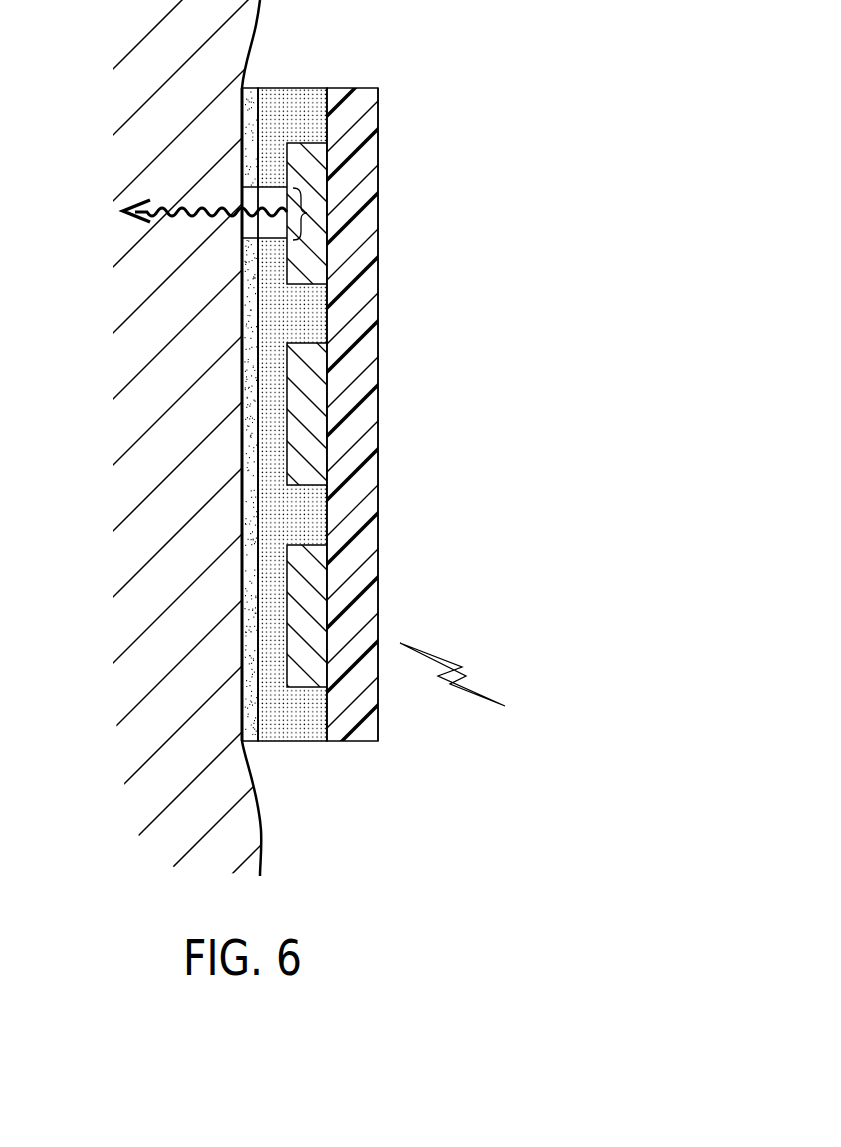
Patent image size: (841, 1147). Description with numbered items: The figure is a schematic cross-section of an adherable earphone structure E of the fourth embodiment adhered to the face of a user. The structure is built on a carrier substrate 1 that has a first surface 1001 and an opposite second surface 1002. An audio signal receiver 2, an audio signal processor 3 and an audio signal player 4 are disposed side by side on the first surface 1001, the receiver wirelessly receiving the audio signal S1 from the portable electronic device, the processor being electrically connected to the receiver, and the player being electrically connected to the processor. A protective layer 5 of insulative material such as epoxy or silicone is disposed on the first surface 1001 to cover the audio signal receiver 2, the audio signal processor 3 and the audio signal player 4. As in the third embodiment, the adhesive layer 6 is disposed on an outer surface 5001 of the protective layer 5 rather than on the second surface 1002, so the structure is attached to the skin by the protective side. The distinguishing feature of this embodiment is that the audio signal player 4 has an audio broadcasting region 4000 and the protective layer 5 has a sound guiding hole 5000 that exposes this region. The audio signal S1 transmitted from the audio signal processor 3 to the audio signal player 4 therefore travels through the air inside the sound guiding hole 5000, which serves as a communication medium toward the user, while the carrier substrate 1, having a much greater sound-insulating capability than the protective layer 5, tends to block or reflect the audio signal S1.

The carrier substrate 1 is at (347, 90).
The first surface 1001 is at (313, 107).
The second surface 1002 is at (393, 113).
The audio signal receiver 2 is at (332, 606).
The audio signal processor 3 is at (332, 388).
The audio signal player 4 is at (330, 162).
The audio broadcasting region 4000 is at (307, 213).
The protective layer 5 is at (299, 744).
The sound guiding hole 5000 is at (272, 232).
The outer surface 5001 is at (232, 122).
The adhesive layer 6 is at (236, 382).
The adherable earphone structure E is at (413, 501).
The audio signal S1 is at (462, 668).